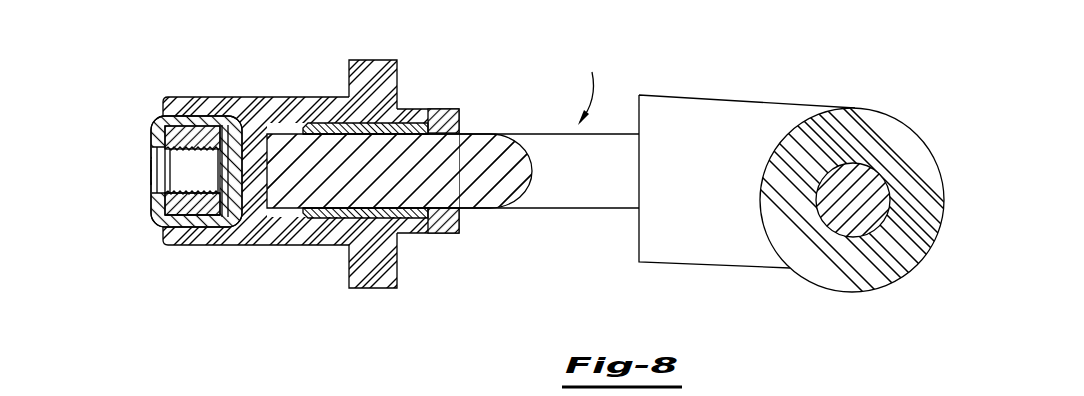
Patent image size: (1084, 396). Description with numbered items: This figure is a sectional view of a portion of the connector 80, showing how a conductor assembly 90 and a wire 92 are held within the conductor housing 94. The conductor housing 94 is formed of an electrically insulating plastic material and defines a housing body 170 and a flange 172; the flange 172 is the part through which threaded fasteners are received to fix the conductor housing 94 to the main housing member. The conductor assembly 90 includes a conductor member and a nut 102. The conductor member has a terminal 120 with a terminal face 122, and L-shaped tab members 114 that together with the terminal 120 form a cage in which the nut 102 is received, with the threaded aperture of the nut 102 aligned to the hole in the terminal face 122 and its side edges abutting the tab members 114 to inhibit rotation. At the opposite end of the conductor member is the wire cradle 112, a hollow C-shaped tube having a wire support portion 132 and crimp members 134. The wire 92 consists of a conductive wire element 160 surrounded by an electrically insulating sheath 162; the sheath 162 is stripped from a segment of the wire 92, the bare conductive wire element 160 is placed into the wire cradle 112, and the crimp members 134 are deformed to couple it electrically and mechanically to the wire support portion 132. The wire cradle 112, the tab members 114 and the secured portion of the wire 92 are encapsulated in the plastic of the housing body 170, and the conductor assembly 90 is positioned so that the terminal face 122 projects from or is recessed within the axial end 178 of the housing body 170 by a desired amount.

The connector 80 is at (592, 85).
The conductor assembly 90 is at (198, 112).
The wire 92 is at (692, 258).
The conductor housing 94 is at (458, 122).
The nut 102 is at (187, 204).
The wire cradle 112 is at (378, 212).
The tab member 114 is at (206, 228).
The terminal 120 is at (158, 146).
The terminal face 122 is at (152, 202).
The wire support portion 132 is at (409, 249).
The crimp member 134 is at (378, 125).
The conductive wire element 160 is at (577, 188).
The electrically insulating sheath 162 is at (730, 123).
The housing body 170 is at (254, 103).
The flange 172 is at (383, 65).
The axial end 178 is at (168, 108).